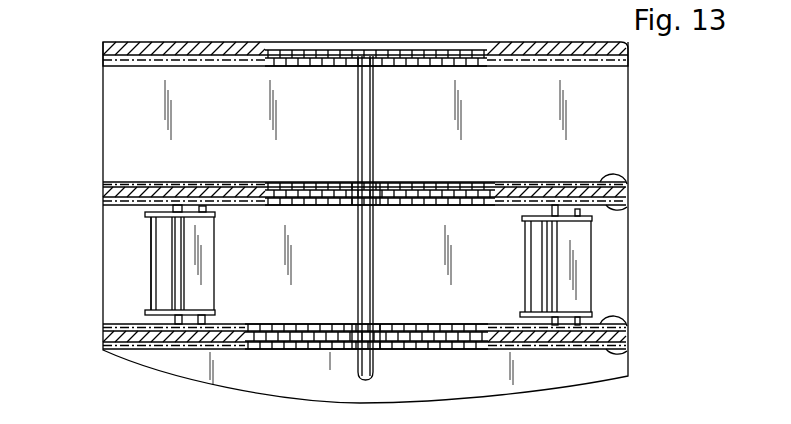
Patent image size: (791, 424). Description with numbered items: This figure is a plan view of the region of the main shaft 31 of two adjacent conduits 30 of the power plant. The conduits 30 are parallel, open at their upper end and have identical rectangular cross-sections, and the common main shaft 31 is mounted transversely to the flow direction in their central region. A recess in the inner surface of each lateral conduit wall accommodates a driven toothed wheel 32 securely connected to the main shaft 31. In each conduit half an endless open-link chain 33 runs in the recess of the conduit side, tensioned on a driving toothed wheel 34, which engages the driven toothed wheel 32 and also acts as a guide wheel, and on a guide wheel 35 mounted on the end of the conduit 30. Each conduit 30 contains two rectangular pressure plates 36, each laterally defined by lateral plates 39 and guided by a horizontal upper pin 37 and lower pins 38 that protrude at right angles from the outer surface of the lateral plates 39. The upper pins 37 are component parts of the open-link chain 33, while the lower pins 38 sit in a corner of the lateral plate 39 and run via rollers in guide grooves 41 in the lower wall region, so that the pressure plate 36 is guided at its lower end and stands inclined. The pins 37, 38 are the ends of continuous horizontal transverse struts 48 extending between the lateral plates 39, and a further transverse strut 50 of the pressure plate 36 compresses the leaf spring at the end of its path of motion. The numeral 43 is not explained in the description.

The conduit 30 is at (118, 104).
The main shaft 31 is at (374, 126).
The driven toothed wheel 32 is at (381, 184).
The endless open-link chain 33 is at (607, 67).
The driving toothed wheel 34 is at (286, 67).
The guide wheel 35 is at (503, 4).
The pressure plate 36 is at (200, 265).
The upper pin 37 is at (176, 202).
The lower pin 38 is at (208, 210).
The lateral plate 39 is at (160, 222).
The guide groove 41 is at (427, 4).
The rail element 43 is at (362, 4).
The transverse strut 48 is at (182, 286).
The transverse strut 50 is at (150, 261).